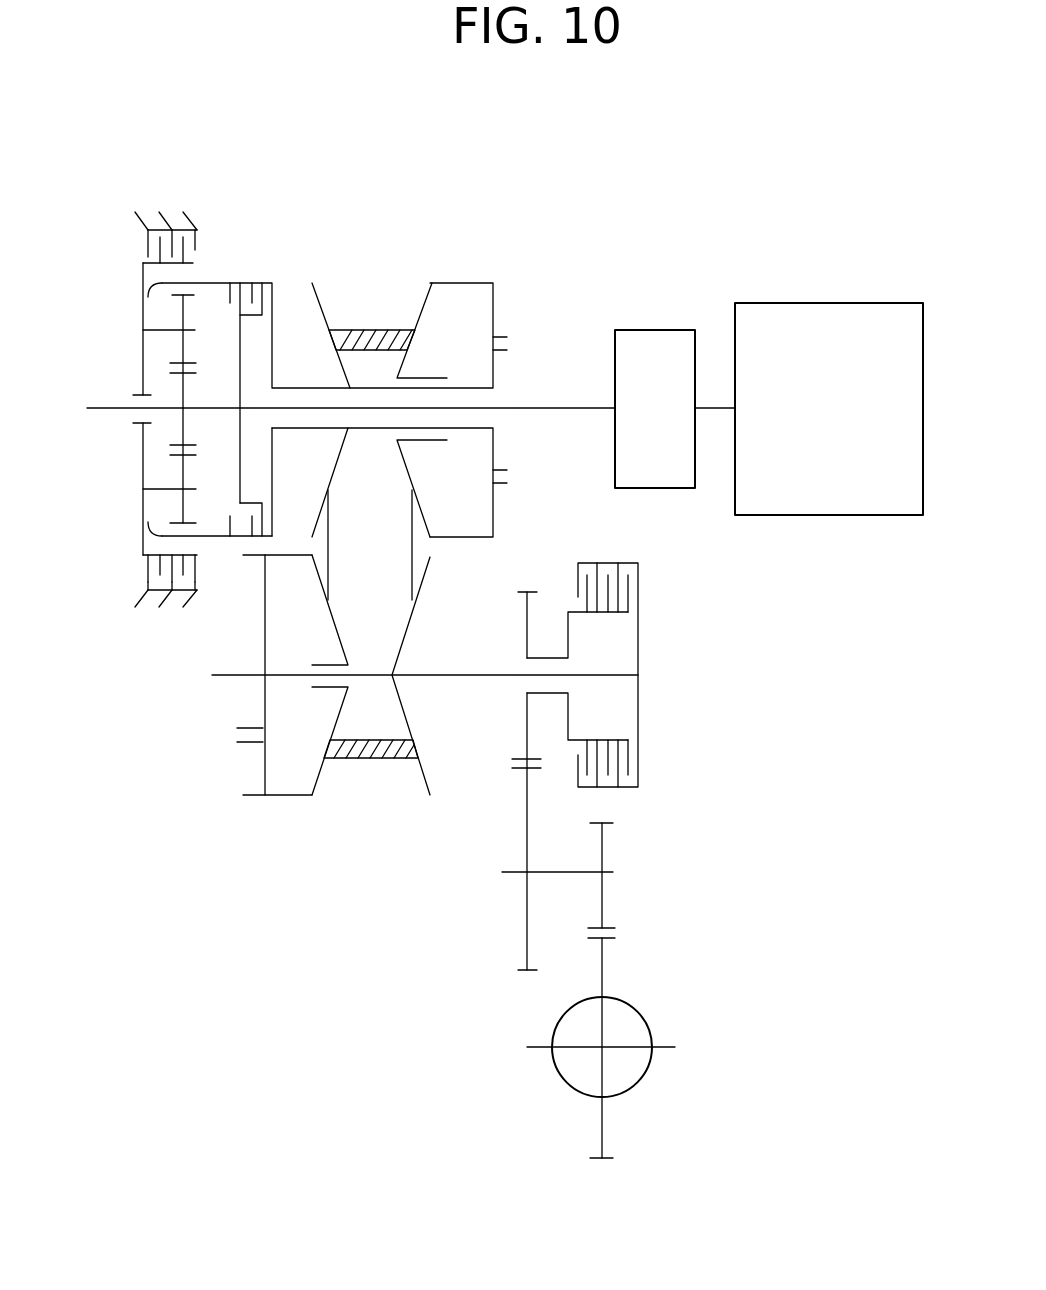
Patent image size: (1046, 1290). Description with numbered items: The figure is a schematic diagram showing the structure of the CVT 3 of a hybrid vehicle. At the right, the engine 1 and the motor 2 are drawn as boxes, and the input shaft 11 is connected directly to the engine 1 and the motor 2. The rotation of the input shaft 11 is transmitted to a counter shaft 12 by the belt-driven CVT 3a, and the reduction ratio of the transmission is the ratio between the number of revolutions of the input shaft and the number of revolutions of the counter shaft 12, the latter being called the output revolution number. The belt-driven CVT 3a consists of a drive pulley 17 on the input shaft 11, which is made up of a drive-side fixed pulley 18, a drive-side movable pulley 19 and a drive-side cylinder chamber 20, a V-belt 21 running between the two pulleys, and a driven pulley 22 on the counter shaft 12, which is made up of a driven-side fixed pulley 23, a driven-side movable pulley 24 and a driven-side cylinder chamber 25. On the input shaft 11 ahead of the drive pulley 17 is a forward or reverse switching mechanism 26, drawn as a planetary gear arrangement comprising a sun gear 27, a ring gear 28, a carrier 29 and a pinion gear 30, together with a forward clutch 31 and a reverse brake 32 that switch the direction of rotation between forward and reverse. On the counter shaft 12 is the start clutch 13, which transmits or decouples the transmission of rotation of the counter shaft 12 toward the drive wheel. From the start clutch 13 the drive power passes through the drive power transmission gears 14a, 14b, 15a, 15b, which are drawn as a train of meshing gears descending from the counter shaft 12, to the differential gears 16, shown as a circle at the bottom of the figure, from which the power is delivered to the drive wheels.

The engine 1 is at (860, 303).
The motor 2 is at (658, 330).
The CVT 3 is at (297, 190).
The belt-driven CVT 3a is at (389, 277).
The input shaft 11 is at (537, 410).
The counter shaft 12 is at (457, 677).
The start clutch 13 is at (648, 771).
The drive power transmission gear 14a is at (527, 627).
The drive power transmission gear 14b is at (520, 970).
The drive power transmission gear 15a is at (605, 849).
The drive power transmission gear 15b is at (605, 966).
The differential gears 16 is at (563, 1084).
The drive pulley 17 is at (465, 271).
The drive-side fixed pulley 18 is at (320, 308).
The drive-side movable pulley 19 is at (420, 308).
The drive-side cylinder chamber 20 is at (392, 341).
The V-belt 21 is at (420, 545).
The driven pulley 22 is at (333, 734).
The driven-side fixed pulley 23 is at (428, 795).
The driven-side movable pulley 24 is at (320, 773).
The driven-side cylinder chamber 25 is at (275, 641).
The forward or reverse switching mechanism 26 is at (121, 376).
The sun gear 27 is at (183, 428).
The ring gear 28 is at (160, 522).
The carrier 29 is at (143, 283).
The pinion gear 30 is at (183, 340).
The forward clutch 31 is at (252, 283).
The reverse brake 32 is at (148, 240).